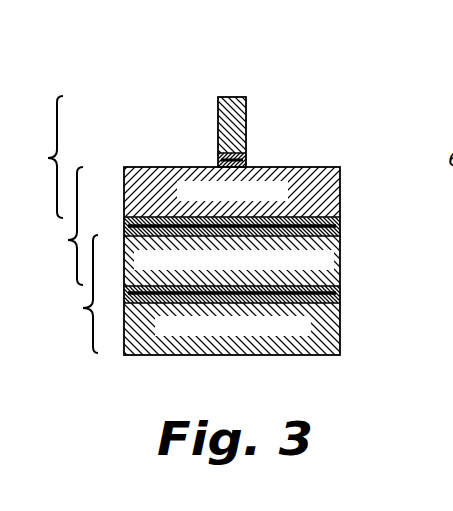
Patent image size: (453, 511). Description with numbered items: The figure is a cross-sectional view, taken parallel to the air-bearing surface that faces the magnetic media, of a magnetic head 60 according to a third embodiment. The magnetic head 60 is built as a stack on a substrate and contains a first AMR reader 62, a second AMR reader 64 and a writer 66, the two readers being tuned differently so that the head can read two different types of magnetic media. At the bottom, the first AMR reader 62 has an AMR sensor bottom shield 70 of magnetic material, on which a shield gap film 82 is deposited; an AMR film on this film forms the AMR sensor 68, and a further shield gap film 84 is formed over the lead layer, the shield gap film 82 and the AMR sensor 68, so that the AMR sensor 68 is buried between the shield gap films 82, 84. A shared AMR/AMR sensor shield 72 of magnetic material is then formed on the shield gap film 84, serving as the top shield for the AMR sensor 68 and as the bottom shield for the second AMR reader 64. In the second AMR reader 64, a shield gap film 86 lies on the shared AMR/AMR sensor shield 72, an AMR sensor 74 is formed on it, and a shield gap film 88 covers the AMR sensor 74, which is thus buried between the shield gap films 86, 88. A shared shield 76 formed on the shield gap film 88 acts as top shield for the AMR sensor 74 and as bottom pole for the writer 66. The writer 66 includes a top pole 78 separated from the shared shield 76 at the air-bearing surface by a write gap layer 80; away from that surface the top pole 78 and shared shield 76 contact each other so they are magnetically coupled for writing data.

The magnetic head 60 is at (267, 184).
The first AMR reader 62 is at (77, 294).
The second AMR reader 64 is at (61, 226).
The writer 66 is at (42, 157).
The AMR sensor 68 is at (172, 297).
The AMR sensor bottom shield 70 is at (340, 330).
The shared AMR/AMR sensor shield 72 is at (340, 262).
The AMR sensor 74 is at (167, 218).
The shared shield 76 is at (340, 187).
The top pole 78 is at (246, 121).
The write gap layer 80 is at (256, 159).
The shield gap film 82 is at (267, 298).
The shield gap film 84 is at (340, 293).
The shield gap film 86 is at (267, 229).
The shield gap film 88 is at (340, 228).